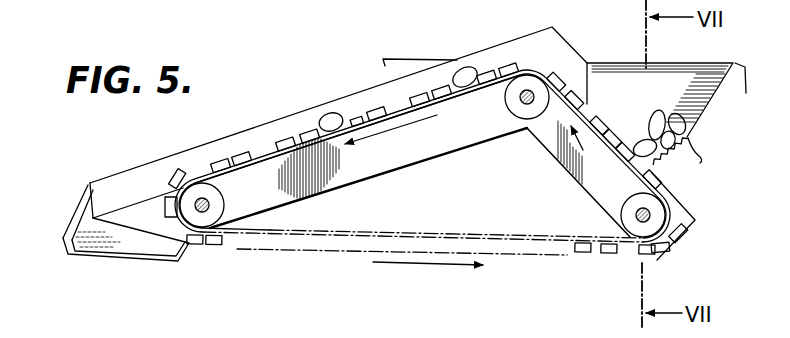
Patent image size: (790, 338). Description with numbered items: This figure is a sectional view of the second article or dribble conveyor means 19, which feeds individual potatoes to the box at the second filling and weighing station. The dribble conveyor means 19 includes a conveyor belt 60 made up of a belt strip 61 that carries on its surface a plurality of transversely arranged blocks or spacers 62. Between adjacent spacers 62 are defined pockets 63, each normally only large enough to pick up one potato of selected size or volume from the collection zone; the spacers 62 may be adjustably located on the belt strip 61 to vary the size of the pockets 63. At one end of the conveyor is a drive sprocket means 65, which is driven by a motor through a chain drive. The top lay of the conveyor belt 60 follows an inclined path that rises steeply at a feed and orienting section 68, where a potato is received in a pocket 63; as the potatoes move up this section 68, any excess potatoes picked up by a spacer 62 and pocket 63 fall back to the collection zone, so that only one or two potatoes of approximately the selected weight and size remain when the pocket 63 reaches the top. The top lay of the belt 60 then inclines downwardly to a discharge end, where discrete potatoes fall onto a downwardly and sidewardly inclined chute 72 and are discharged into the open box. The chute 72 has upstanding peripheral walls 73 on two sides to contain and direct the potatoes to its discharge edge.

The dribble conveyor means 19 is at (295, 90).
The conveyor belt 60 is at (262, 153).
The belt strip 61 is at (405, 108).
The spacers 62 is at (358, 114).
The pockets 63 is at (340, 118).
The drive sprocket means 65 is at (197, 218).
The feed and orienting section 68 is at (593, 110).
The chute 72 is at (130, 243).
The upstanding peripheral walls 73 is at (125, 185).